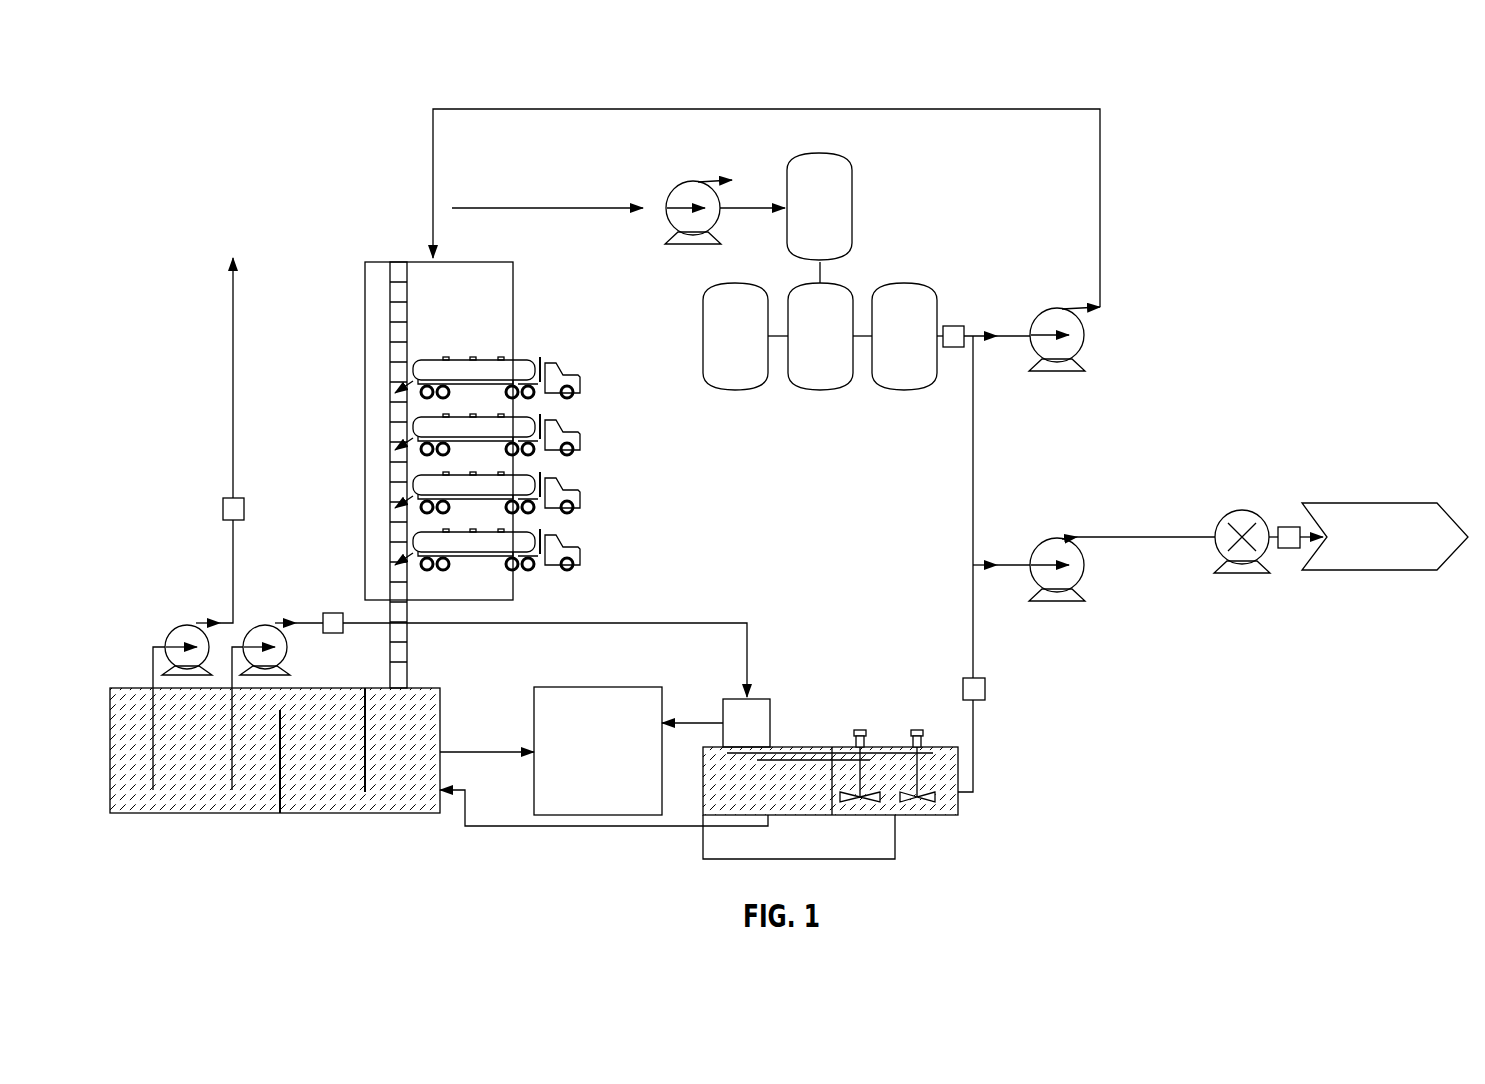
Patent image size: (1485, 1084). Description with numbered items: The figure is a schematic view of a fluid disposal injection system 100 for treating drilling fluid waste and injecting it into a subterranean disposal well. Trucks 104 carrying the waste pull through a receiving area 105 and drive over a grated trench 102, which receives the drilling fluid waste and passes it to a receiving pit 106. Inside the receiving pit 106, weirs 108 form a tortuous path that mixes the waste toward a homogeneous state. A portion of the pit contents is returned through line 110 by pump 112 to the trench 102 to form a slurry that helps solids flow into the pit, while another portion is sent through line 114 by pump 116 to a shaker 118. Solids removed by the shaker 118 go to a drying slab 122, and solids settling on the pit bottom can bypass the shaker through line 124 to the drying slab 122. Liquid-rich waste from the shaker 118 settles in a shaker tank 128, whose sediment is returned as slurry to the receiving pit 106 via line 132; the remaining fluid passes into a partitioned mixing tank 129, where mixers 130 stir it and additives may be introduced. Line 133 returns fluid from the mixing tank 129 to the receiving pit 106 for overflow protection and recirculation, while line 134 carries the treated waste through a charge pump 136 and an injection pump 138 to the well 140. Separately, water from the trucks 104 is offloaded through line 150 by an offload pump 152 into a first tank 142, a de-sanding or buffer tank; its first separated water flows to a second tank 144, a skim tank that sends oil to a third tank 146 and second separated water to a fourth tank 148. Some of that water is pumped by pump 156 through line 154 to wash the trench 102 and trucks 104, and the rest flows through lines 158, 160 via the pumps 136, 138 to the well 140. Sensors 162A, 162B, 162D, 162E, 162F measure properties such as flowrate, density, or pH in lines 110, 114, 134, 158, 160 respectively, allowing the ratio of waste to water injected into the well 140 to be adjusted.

The fluid disposal injection system 100 is at (288, 100).
The trench 102 is at (390, 322).
The vehicles (trucks) 104 is at (581, 500).
The receiving area 105 is at (365, 372).
The receiving pit 106 is at (165, 813).
The weirs 108 is at (280, 757).
The line 110 is at (233, 307).
The pump 112 is at (172, 630).
The line 114 is at (440, 625).
The pump 116 is at (287, 651).
The shaker 118 is at (760, 697).
The drying slab 122 is at (595, 687).
The line 124 is at (488, 752).
The shaker tank 128 is at (800, 747).
The mixing tank 129 is at (880, 747).
The mixers 130 is at (868, 800).
The line 132 is at (605, 827).
The line 133 is at (830, 860).
The line 134 is at (973, 770).
The charge pump 136 is at (1085, 565).
The injection pump 138 is at (1245, 510).
The well 140 is at (1400, 503).
The first tank 142 is at (853, 195).
The second tank 144 is at (842, 348).
The third tank 146 is at (757, 348).
The fourth tank 148 is at (926, 348).
The line 150 is at (612, 208).
The offload pump 152 is at (680, 185).
The line 154 is at (1035, 109).
The pump 156 is at (1085, 336).
The line 158 is at (973, 463).
The line 160 is at (1010, 565).
The first sensor 162A is at (244, 508).
The second sensor 162B is at (333, 613).
The fourth sensor 162D is at (985, 690).
The fifth sensor 162E is at (955, 326).
The sixth sensor 162F is at (1288, 548).